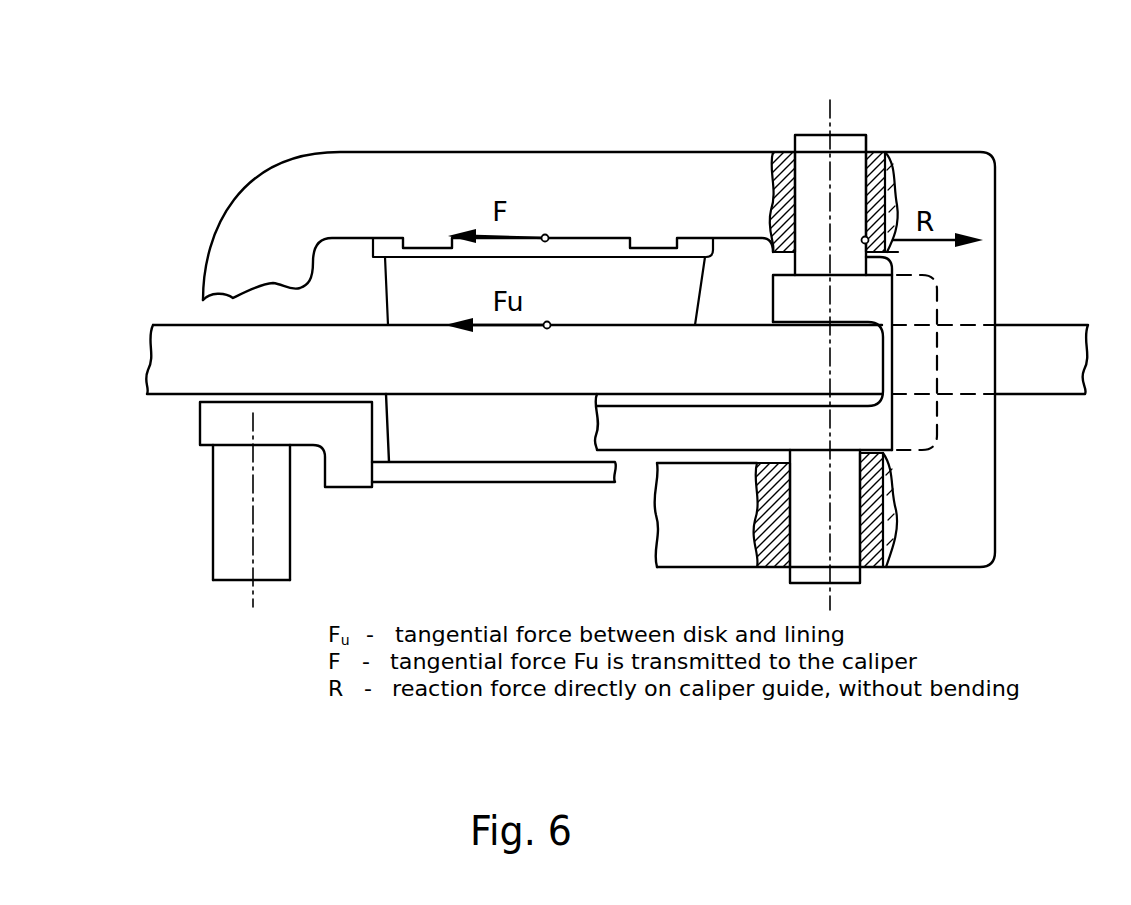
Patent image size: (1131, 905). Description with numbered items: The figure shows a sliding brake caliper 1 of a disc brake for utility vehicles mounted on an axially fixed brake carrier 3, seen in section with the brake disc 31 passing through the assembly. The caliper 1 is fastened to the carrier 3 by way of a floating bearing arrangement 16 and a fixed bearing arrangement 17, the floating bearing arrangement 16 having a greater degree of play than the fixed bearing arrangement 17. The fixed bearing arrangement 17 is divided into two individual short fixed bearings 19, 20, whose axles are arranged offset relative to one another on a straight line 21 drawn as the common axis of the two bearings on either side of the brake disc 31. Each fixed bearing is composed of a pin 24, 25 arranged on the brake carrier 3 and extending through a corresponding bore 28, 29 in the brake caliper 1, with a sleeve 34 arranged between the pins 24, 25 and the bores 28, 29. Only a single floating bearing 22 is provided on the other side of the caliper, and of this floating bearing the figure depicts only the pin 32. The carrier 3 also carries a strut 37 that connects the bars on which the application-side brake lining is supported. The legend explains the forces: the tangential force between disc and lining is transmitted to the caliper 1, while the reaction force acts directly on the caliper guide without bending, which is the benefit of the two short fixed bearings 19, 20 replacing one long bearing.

The brake caliper 1 is at (405, 157).
The brake carrier 3 is at (724, 458).
The floating bearing arrangement 16 is at (174, 469).
The fixed bearing arrangement 17 is at (898, 133).
The fixed bearing 19 is at (896, 188).
The fixed bearing 20 is at (896, 500).
The straight line 21 is at (845, 114).
The floating bearing 22 is at (216, 487).
The pin 24 is at (805, 150).
The pin 25 is at (843, 473).
The bore 28 is at (896, 541).
The bore 29 is at (896, 210).
The brake disc 31 is at (180, 342).
The pin 32 is at (277, 547).
The sleeve 34 is at (876, 142).
The strut 37 is at (643, 440).